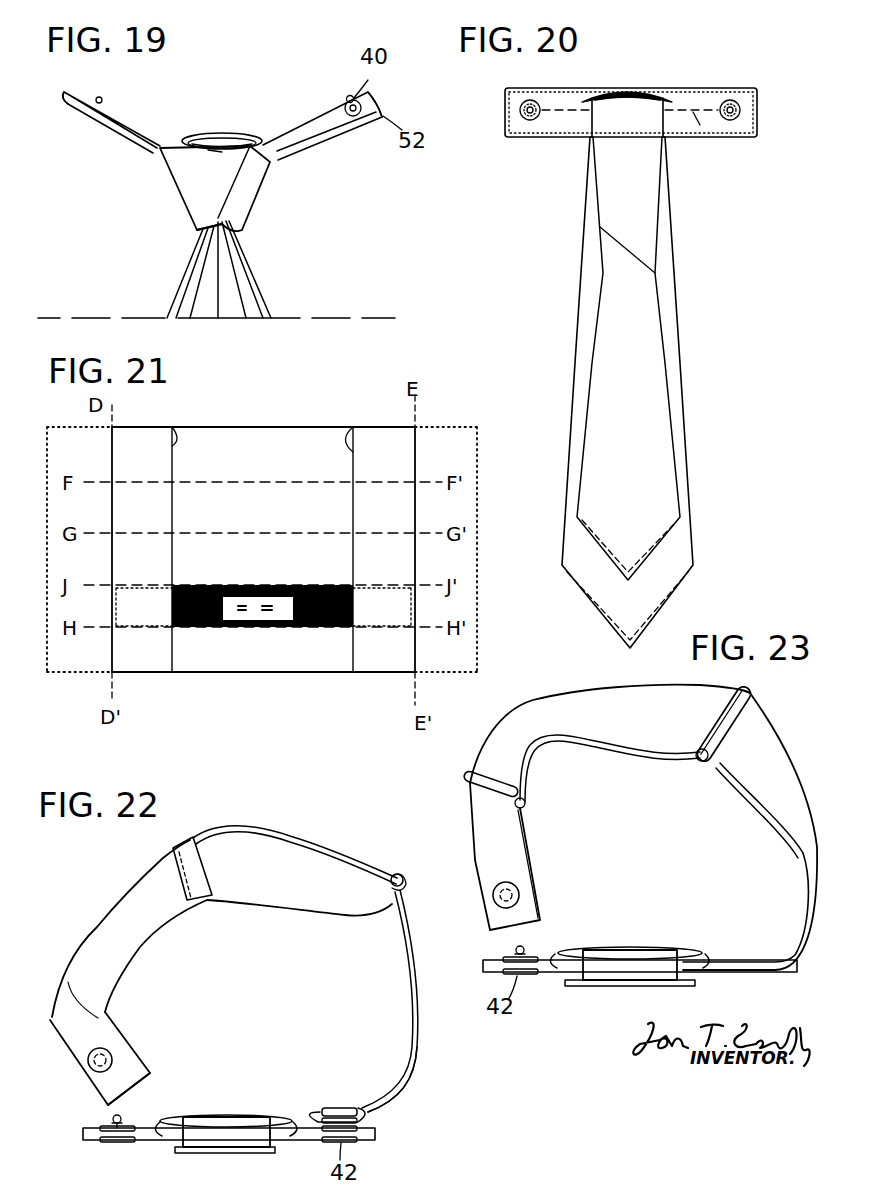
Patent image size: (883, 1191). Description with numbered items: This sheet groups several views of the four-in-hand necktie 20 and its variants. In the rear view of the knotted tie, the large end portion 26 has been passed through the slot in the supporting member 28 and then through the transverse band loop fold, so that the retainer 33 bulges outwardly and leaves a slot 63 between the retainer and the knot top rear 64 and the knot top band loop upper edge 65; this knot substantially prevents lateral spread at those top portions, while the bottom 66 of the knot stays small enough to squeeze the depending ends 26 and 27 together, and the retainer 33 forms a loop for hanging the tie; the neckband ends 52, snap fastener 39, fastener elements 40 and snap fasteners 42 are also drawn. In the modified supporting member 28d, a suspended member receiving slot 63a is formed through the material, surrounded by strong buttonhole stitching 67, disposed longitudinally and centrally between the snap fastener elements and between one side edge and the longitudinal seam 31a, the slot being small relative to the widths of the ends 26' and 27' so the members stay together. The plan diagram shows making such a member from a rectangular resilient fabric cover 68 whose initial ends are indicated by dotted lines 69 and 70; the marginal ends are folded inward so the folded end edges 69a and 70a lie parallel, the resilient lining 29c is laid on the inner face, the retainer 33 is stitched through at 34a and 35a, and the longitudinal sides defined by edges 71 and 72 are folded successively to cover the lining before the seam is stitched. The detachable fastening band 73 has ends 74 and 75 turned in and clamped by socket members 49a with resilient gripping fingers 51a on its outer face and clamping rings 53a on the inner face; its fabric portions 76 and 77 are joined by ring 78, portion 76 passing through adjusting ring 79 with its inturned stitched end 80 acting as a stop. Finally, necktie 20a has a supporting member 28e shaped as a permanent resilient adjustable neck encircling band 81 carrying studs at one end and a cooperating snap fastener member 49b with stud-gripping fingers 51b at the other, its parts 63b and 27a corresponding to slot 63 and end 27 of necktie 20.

In FIG. 19, the four-in-hand necktie 20 is at (250, 212).
In FIG. 22, the four-in-hand necktie 20 is at (214, 1134).
In FIG. 19, the large end portion 26 is at (167, 270).
In FIG. 19, the end portion of necktie 27 is at (273, 269).
In FIG. 22, the end portion of necktie 27 is at (229, 1153).
In FIG. 19, the supporting member 28 is at (140, 150).
In FIG. 22, the supporting member 28 is at (150, 1141).
In FIG. 19, the retainer 33 is at (195, 135).
In FIG. 21, the retainer 33 is at (256, 622).
In FIG. 22, the retainer 33 is at (230, 1116).
In FIG. 19, the snap fastener 39 is at (362, 106).
In FIG. 19, the fastener button 40 is at (102, 98).
In FIG. 22, the fastener button 40 is at (121, 1116).
In FIG. 20, the snap fasteners 42 is at (742, 110).
In FIG. 22, the snap fasteners 42 is at (110, 1142).
In FIG. 23, the snap fasteners 42 is at (514, 950).
In FIG. 19, the neckband end 52 is at (82, 110).
In FIG. 19, the slot 63 is at (232, 140).
In FIG. 22, the slot 63 is at (275, 1115).
In FIG. 19, the knot top rear 64 is at (214, 151).
In FIG. 19, the knot top band loop upper edge 65 is at (246, 140).
In FIG. 19, the bottom of the knot 66 is at (195, 229).
In FIG. 20, the suspended member receiving slot 63a is at (632, 97).
In FIG. 20, the buttonhole stitching 67 is at (680, 98).
In FIG. 20, the modified supporting member 28d is at (546, 140).
In FIG. 20, the longitudinal seam 31a is at (700, 125).
In FIG. 20, the larger end of suspended member 26' is at (604, 373).
In FIG. 20, the end of suspended member 27' is at (662, 358).
In FIG. 21, the fabric cover 68 is at (293, 427).
In FIG. 21, the dotted line 69 is at (47, 672).
In FIG. 21, the folded end edge 69a is at (182, 420).
In FIG. 21, the dotted line 70 is at (477, 653).
In FIG. 21, the folded end edge 70a is at (352, 430).
In FIG. 21, the longitudinal side edge 71 is at (210, 430).
In FIG. 21, the opposite longitudinal side edge 72 is at (382, 672).
In FIG. 21, the resilient lining 29c is at (182, 630).
In FIG. 21, the stitching 34a is at (212, 628).
In FIG. 21, the stitching 35a is at (318, 628).
In FIG. 22, the fastening band 73 is at (420, 1034).
In FIG. 22, the band end 74 is at (318, 1114).
In FIG. 22, the band end 75 is at (136, 1054).
In FIG. 22, the band fabric portion 76 is at (408, 958).
In FIG. 22, the band fabric portion 77 is at (142, 948).
In FIG. 22, the ring 78 is at (185, 842).
In FIG. 23, the ring 78 is at (527, 808).
In FIG. 22, the adjusting ring 79 is at (396, 874).
In FIG. 23, the adjusting ring 79 is at (712, 768).
In FIG. 22, the inturned end 80 is at (370, 865).
In FIG. 22, the socket members 49a is at (88, 1058).
In FIG. 22, the resilient gripping fingers 51a is at (98, 1072).
In FIG. 22, the socket member clamping rings 53a is at (352, 1098).
In FIG. 23, the neck encircling band 81 is at (812, 892).
In FIG. 23, the snap fastener member 49b is at (518, 892).
In FIG. 23, the stud-gripping fingers 51b is at (490, 906).
In FIG. 23, the slot 63b is at (680, 950).
In FIG. 23, the necktie 20a is at (612, 966).
In FIG. 23, the end portion of necktie 27a is at (692, 982).
In FIG. 23, the supporting member 28e is at (558, 975).